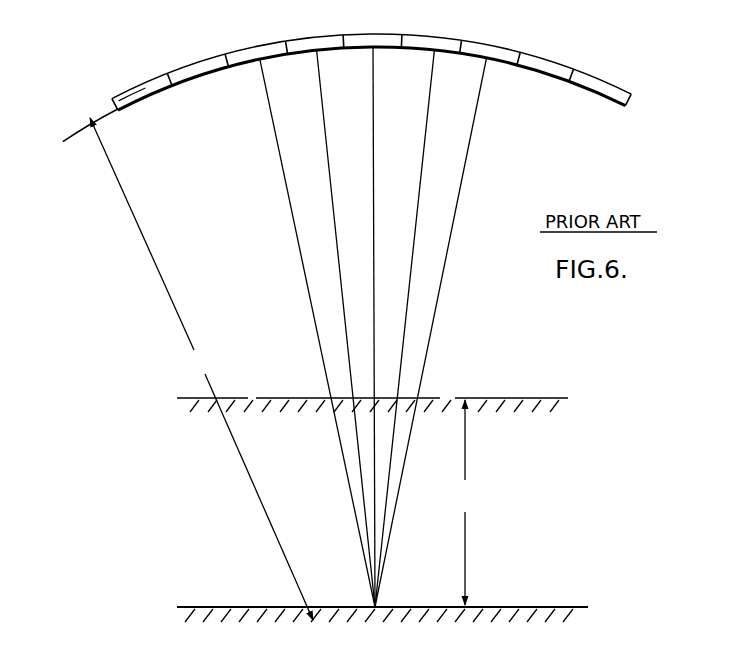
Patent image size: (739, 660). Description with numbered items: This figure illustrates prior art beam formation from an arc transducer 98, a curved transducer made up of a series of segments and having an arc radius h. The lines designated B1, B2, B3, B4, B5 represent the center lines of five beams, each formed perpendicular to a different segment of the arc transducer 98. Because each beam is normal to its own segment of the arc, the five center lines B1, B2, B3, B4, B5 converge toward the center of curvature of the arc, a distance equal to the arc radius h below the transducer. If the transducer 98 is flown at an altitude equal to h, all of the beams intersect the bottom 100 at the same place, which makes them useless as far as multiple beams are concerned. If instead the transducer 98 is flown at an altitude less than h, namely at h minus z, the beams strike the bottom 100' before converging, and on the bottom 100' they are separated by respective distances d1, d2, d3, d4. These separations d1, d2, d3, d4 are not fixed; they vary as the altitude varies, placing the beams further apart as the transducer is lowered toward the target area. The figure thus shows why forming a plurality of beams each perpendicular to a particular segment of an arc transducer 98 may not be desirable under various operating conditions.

The arc transducer 98 is at (195, 57).
The bottom 100 is at (382, 595).
The bottom 100' is at (372, 386).
The beam center line B1 is at (284, 183).
The beam center line B2 is at (324, 138).
The beam center line B3 is at (373, 200).
The beam center line B4 is at (422, 148).
The beam center line B5 is at (455, 212).
The beam separation distance d1 is at (335, 364).
The beam separation distance d2 is at (360, 349).
The beam separation distance d3 is at (388, 364).
The beam separation distance d4 is at (415, 351).
The arc radius h is at (201, 369).
The altitude reduction z is at (463, 502).